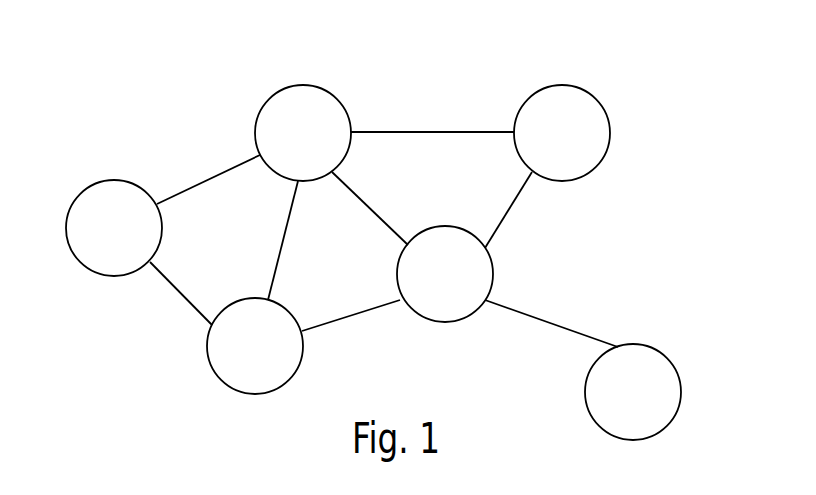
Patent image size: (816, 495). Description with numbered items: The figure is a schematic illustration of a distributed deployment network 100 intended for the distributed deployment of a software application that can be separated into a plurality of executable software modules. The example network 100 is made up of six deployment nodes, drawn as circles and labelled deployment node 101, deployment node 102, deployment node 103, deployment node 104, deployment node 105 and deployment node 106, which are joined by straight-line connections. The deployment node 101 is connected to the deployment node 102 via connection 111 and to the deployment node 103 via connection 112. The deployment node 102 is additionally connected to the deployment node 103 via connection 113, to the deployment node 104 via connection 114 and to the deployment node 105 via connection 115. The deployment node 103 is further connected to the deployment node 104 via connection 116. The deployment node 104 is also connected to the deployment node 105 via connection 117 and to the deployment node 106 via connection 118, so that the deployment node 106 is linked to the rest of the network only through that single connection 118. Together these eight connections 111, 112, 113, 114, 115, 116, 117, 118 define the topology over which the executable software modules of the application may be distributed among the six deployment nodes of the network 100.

The distributed deployment network 100 is at (680, 190).
The deployment node 101 is at (114, 228).
The deployment node 102 is at (303, 133).
The deployment node 103 is at (255, 346).
The deployment node 104 is at (445, 274).
The deployment node 105 is at (562, 133).
The deployment node 106 is at (633, 392).
The connection 111 is at (211, 178).
The connection 112 is at (183, 302).
The connection 113 is at (283, 252).
The connection 114 is at (385, 224).
The connection 115 is at (447, 130).
The connection 116 is at (360, 310).
The connection 117 is at (510, 207).
The connection 118 is at (572, 330).